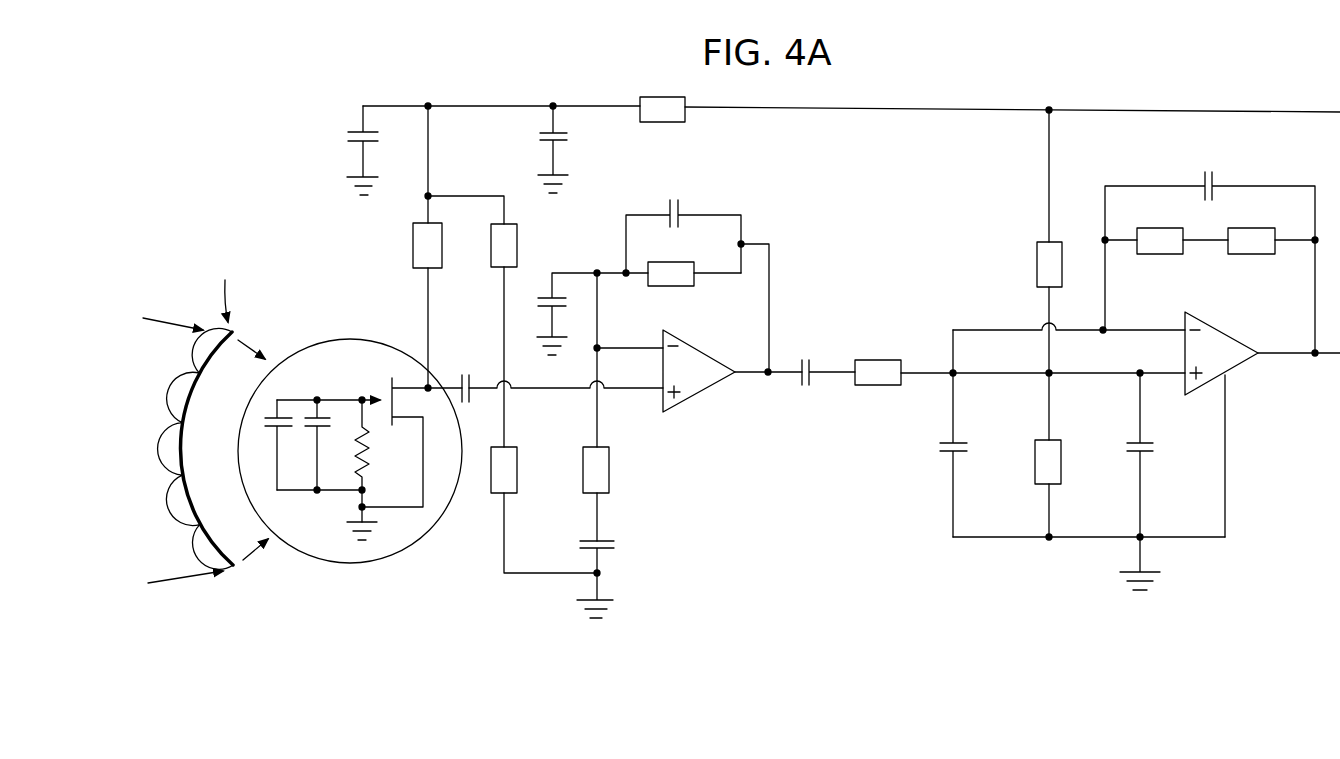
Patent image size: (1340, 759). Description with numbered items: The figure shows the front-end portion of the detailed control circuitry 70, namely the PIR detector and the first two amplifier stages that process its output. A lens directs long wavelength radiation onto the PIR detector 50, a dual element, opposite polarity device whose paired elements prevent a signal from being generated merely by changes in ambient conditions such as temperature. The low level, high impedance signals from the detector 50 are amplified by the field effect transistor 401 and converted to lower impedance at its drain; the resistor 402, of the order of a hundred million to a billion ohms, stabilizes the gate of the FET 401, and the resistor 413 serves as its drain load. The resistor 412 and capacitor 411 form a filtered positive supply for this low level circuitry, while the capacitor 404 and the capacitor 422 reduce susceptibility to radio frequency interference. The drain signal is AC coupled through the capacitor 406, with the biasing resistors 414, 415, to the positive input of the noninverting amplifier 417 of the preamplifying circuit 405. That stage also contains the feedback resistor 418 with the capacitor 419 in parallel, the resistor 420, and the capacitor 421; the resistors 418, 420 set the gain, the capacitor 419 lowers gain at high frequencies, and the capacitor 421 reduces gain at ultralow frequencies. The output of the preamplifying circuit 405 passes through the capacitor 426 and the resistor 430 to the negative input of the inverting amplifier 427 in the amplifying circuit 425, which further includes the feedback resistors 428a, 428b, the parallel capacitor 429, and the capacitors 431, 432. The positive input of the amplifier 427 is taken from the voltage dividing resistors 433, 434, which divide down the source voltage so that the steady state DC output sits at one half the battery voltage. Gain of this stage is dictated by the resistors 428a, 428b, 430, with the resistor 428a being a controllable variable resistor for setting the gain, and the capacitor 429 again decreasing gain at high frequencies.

The PIR detector 50 is at (415, 543).
The control circuitry 70 is at (1068, 724).
The field effect transistor 401 is at (413, 398).
The resistor 402 is at (360, 427).
The capacitor 404 is at (348, 137).
The preamplifying circuit 405 is at (763, 541).
The capacitor 406 is at (465, 372).
The capacitor 411 is at (567, 138).
The resistor 412 is at (673, 122).
The resistor 413 is at (413, 232).
The biasing resistor 414 is at (491, 237).
The biasing resistor 415 is at (491, 490).
The noninverting amplifier 417 is at (718, 383).
The feedback resistor 418 is at (678, 286).
The capacitor 419 is at (674, 200).
The resistor 420 is at (609, 493).
The capacitor 421 is at (612, 545).
The capacitor 422 is at (568, 302).
The amplifying circuit 425 is at (1269, 540).
The capacitor 426 is at (804, 358).
The inverting amplifier 427 is at (1252, 360).
The feedback resistor 428a is at (1228, 254).
The feedback resistor 428b is at (1180, 254).
The capacitor 429 is at (1210, 172).
The resistor 430 is at (862, 360).
The capacitor 431 is at (1127, 445).
The capacitor 432 is at (938, 445).
The voltage dividing resistor 433 is at (1037, 255).
The voltage dividing resistor 434 is at (1035, 445).